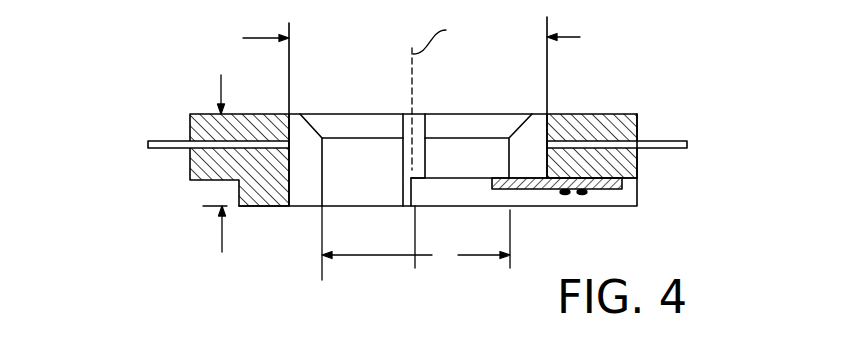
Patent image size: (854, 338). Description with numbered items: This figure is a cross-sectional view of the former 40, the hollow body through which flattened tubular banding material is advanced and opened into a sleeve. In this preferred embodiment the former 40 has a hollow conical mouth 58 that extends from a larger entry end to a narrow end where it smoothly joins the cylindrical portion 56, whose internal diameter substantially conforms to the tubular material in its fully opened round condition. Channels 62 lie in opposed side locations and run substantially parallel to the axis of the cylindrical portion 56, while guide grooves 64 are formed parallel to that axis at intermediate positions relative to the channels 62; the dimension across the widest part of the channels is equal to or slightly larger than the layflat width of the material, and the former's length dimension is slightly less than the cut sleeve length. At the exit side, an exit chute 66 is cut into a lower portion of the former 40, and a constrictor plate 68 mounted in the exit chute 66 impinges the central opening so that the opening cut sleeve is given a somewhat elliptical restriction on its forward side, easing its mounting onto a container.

The former 40 is at (173, 204).
The cylindrical portion 56 is at (362, 178).
The hollow conical mouth 58 is at (346, 126).
The channels 62 is at (421, 125).
The guide grooves 64 is at (531, 126).
The exit chute 66 is at (622, 196).
The constrictor plate 68 is at (637, 182).